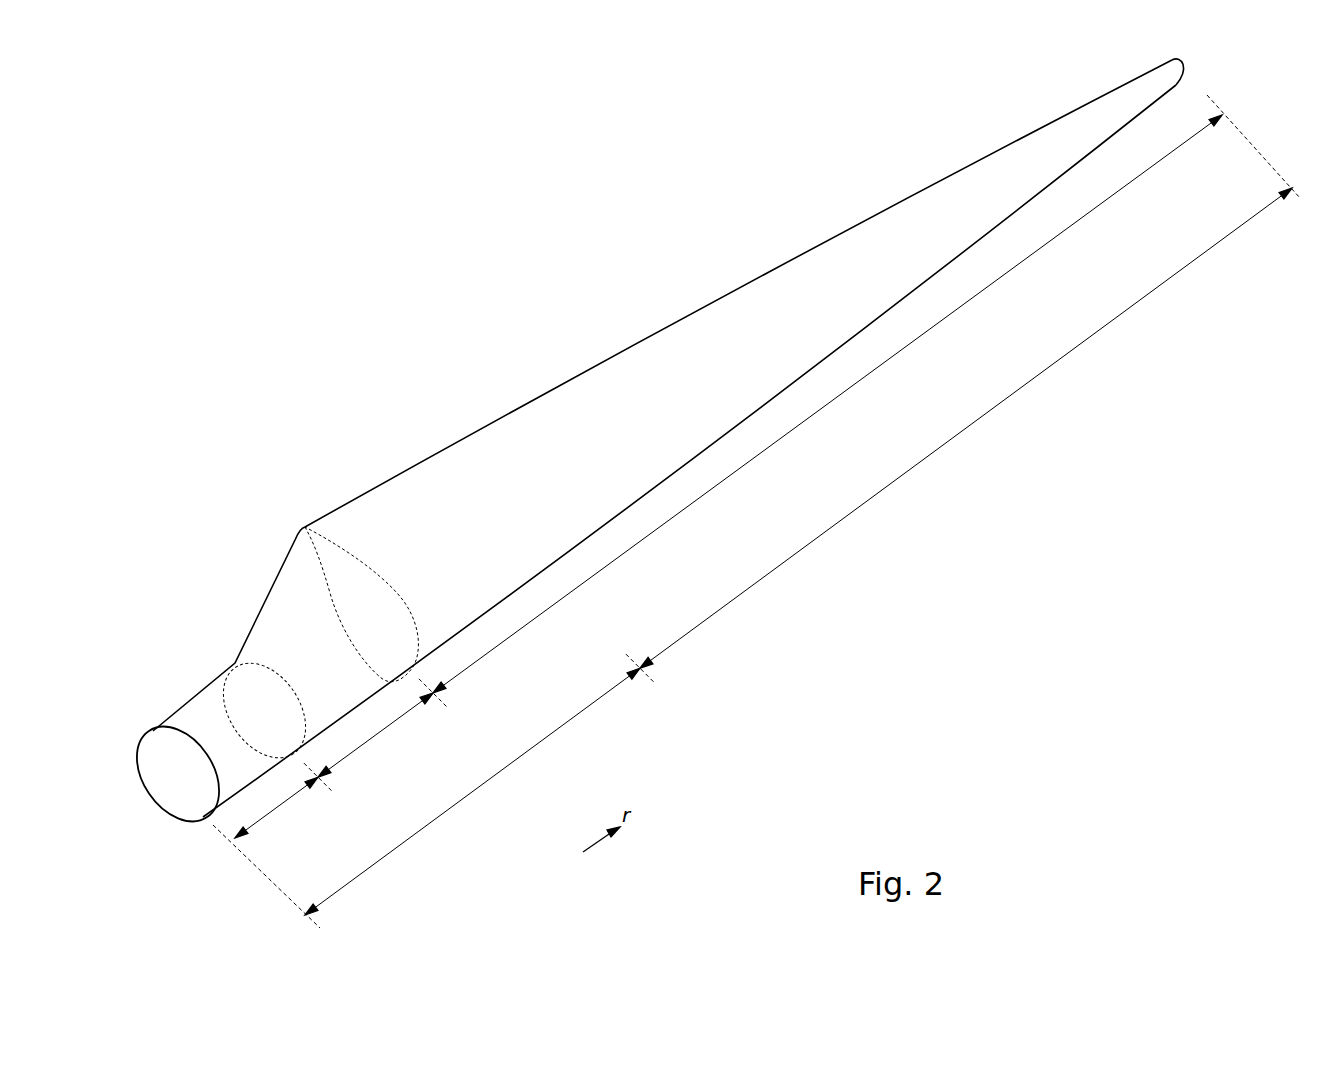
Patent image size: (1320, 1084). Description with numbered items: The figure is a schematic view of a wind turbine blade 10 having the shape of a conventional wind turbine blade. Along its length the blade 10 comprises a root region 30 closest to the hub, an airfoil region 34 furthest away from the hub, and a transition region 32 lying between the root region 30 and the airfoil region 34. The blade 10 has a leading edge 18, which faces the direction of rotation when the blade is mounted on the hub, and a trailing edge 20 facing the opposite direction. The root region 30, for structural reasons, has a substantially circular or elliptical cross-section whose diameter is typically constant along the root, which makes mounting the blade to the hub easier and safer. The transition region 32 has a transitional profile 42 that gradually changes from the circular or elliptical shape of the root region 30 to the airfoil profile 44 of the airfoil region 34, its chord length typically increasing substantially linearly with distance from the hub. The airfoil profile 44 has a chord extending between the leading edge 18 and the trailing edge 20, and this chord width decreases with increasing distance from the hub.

The wind turbine blade 10 is at (652, 448).
The leading edge 18 is at (865, 330).
The trailing edge 20 is at (873, 215).
The root region 30 is at (278, 806).
The transition region 32 is at (380, 732).
The airfoil region 34 is at (750, 461).
The transitional profile 42 is at (512, 762).
The airfoil profile 44 is at (787, 560).